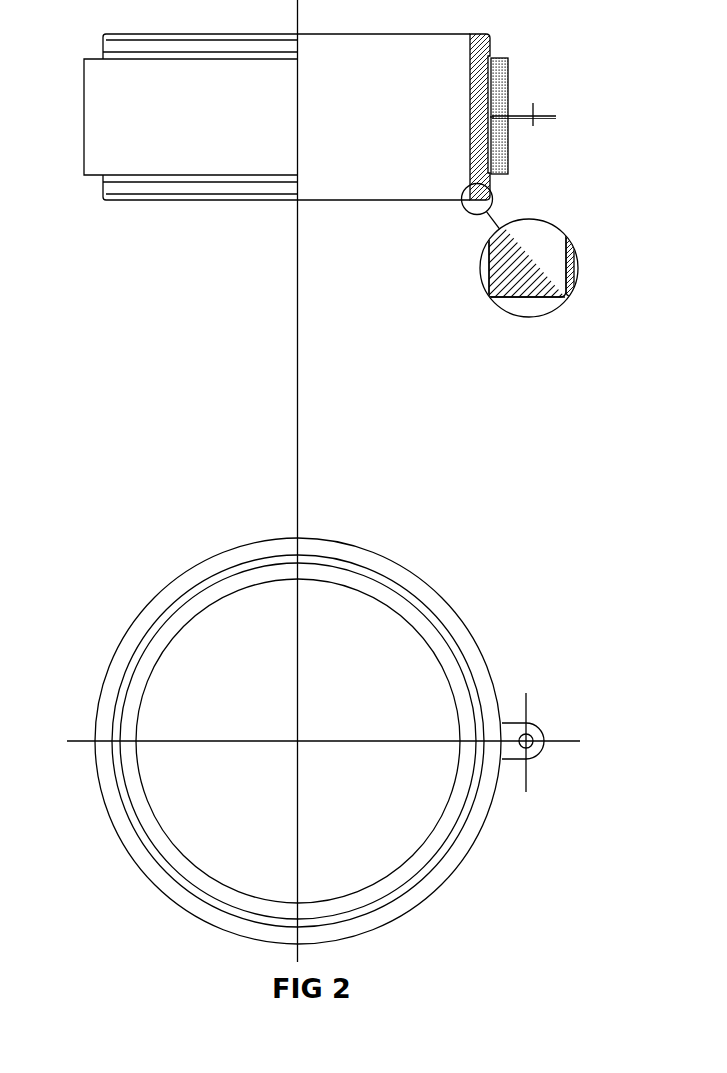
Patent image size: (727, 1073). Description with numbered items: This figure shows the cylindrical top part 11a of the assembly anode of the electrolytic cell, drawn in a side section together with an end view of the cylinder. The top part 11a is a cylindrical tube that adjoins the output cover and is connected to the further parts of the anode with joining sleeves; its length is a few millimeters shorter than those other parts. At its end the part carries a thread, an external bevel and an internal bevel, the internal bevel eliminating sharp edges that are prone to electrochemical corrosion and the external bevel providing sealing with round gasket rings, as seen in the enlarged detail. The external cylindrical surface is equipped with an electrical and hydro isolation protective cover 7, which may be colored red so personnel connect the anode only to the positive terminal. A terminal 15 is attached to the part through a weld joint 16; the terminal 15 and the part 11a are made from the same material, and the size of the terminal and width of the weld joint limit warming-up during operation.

The top part 11a is at (490, 54).
The protective cover 7 is at (505, 87).
The terminal 15 is at (556, 117).
The weld joint 16 is at (494, 118).